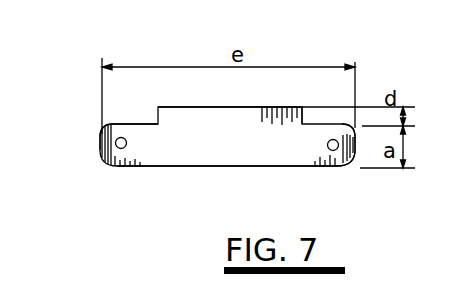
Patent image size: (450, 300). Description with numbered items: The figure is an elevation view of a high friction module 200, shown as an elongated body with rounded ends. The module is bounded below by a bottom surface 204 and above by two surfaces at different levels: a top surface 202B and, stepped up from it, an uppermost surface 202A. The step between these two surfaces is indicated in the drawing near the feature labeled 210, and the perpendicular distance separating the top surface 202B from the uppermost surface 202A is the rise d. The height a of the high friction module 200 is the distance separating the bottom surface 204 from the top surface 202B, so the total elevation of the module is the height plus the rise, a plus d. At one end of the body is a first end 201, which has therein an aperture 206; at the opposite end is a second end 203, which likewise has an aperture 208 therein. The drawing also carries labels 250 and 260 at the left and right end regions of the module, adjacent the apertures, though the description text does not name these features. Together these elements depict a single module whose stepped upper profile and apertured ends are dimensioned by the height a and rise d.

The high friction module 200 is at (178, 175).
The first end 201 is at (102, 128).
The uppermost surface 202A is at (197, 107).
The top surface 202B is at (132, 123).
The second end 203 is at (353, 142).
The bottom surface 204 is at (292, 170).
The aperture 206 is at (105, 134).
The aperture 208 is at (328, 168).
The step 210 is at (302, 120).
The first pin bore 250 is at (112, 163).
The second pin bore 260 is at (352, 147).